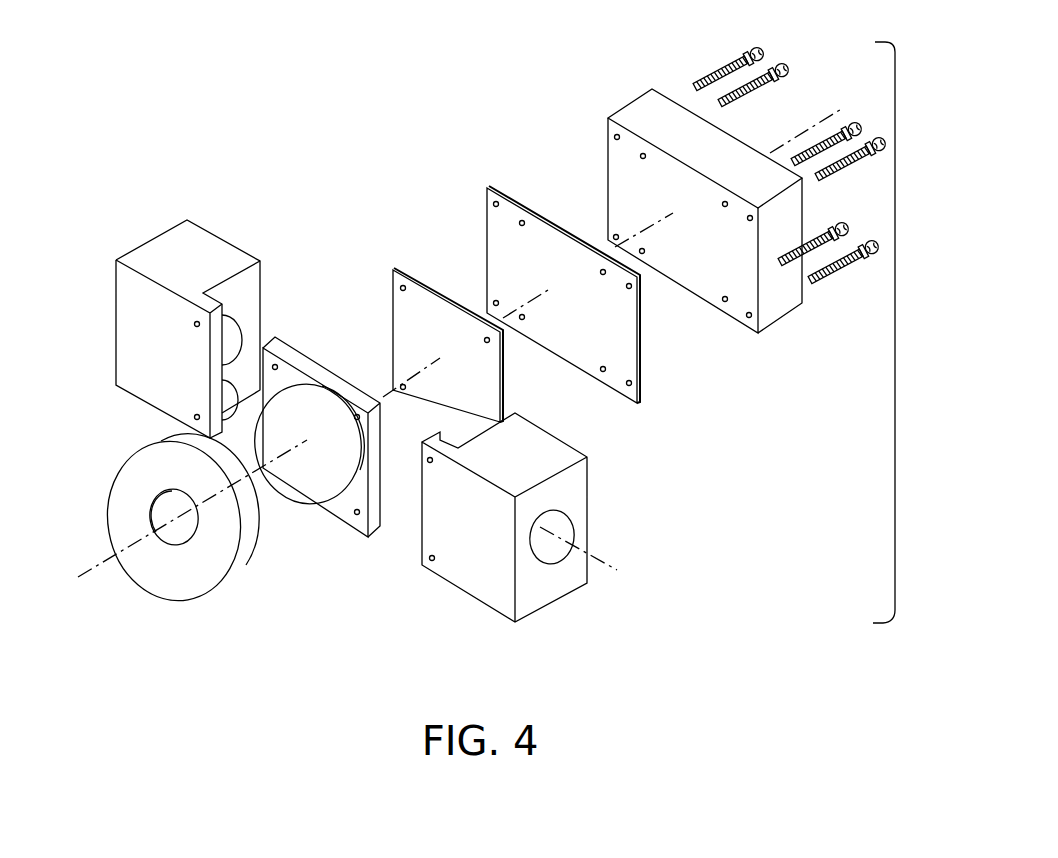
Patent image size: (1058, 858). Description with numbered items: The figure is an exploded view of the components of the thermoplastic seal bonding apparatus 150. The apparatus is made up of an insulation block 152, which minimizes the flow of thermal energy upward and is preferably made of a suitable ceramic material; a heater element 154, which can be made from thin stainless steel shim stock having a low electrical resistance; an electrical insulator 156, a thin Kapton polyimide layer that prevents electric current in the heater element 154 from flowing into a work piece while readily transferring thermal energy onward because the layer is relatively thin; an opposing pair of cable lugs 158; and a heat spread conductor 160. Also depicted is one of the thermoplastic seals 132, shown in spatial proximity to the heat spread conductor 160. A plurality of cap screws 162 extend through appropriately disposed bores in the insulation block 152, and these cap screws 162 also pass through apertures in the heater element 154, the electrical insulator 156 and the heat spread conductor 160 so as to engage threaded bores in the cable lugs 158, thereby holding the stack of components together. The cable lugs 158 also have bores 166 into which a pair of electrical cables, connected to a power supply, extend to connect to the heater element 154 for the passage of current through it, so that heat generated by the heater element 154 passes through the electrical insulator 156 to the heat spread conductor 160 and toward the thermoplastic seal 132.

The seal bonding apparatus 150 is at (897, 282).
The thermoplastic seal 132 is at (173, 583).
The insulation block 152 is at (632, 183).
The heater element 154 is at (608, 350).
The electrical insulator 156 is at (413, 337).
The cable lugs 158 is at (165, 248).
The heat spread conductor 160 is at (338, 522).
The cap screws 162 is at (730, 62).
The bores 166 is at (232, 403).